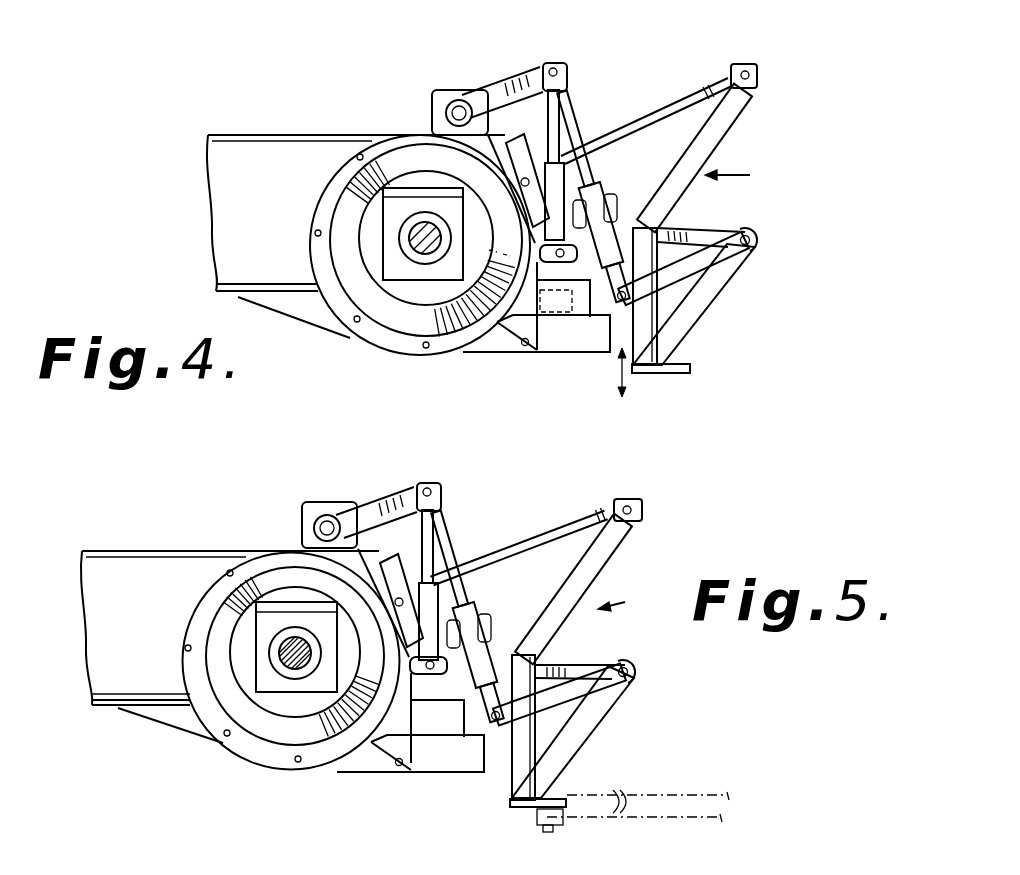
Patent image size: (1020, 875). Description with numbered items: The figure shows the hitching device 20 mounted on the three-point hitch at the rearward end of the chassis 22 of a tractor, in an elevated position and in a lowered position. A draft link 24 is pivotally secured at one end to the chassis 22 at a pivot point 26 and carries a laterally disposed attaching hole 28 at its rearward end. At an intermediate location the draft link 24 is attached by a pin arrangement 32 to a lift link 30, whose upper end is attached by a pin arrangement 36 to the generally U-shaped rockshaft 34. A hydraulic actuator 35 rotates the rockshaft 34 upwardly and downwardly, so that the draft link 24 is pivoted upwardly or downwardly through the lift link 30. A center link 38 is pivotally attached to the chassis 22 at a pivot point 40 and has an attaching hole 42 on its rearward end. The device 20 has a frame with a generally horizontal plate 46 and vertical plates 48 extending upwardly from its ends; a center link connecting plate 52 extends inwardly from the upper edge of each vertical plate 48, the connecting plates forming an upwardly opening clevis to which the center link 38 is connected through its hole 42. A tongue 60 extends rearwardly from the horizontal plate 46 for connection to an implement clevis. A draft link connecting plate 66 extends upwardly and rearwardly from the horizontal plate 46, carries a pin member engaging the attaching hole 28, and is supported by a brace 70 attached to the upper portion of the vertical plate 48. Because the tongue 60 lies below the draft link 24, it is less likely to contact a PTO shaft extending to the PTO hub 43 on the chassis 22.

In FIG. 4, the hitching device 20 is at (745, 176).
In FIG. 5, the hitching device 20 is at (628, 601).
In FIG. 4, the chassis 22 is at (273, 143).
In FIG. 5, the chassis 22 is at (172, 560).
In FIG. 4, the draft link 24 is at (548, 348).
In FIG. 5, the draft link 24 is at (440, 743).
In FIG. 4, the pivot point 26 is at (508, 352).
In FIG. 5, the pivot point 26 is at (390, 760).
In FIG. 4, the attaching hole 28 is at (752, 238).
In FIG. 5, the attaching hole 28 is at (633, 672).
In FIG. 4, the lift link 30 is at (566, 108).
In FIG. 5, the lift link 30 is at (446, 576).
In FIG. 4, the pin arrangement 32 is at (627, 290).
In FIG. 5, the pin arrangement 32 is at (475, 698).
In FIG. 4, the rockshaft 34 is at (486, 95).
In FIG. 5, the rockshaft 34 is at (376, 502).
In FIG. 4, the hydraulic actuator 35 is at (582, 137).
In FIG. 5, the hydraulic actuator 35 is at (460, 559).
In FIG. 4, the pin arrangement 36 is at (555, 67).
In FIG. 5, the pin arrangement 36 is at (430, 477).
In FIG. 4, the center link 38 is at (669, 105).
In FIG. 5, the center link 38 is at (556, 522).
In FIG. 4, the pivot point 40 is at (525, 175).
In FIG. 5, the pivot point 40 is at (401, 583).
In FIG. 4, the attaching hole 42 is at (745, 66).
In FIG. 5, the attaching hole 42 is at (635, 510).
In FIG. 4, the PTO hub 43 is at (548, 327).
In FIG. 4, the horizontal plate 46 is at (650, 373).
In FIG. 5, the horizontal plate 46 is at (513, 803).
In FIG. 4, the vertical plate 48 is at (652, 320).
In FIG. 5, the vertical plate 48 is at (560, 740).
In FIG. 4, the center link connecting plate 52 is at (718, 133).
In FIG. 5, the center link connecting plate 52 is at (612, 555).
In FIG. 4, the tongue 60 is at (690, 368).
In FIG. 5, the tongue 60 is at (583, 795).
In FIG. 4, the draft link connecting plate 66 is at (738, 269).
In FIG. 5, the draft link connecting plate 66 is at (605, 708).
In FIG. 4, the brace 70 is at (702, 228).
In FIG. 5, the brace 70 is at (578, 670).